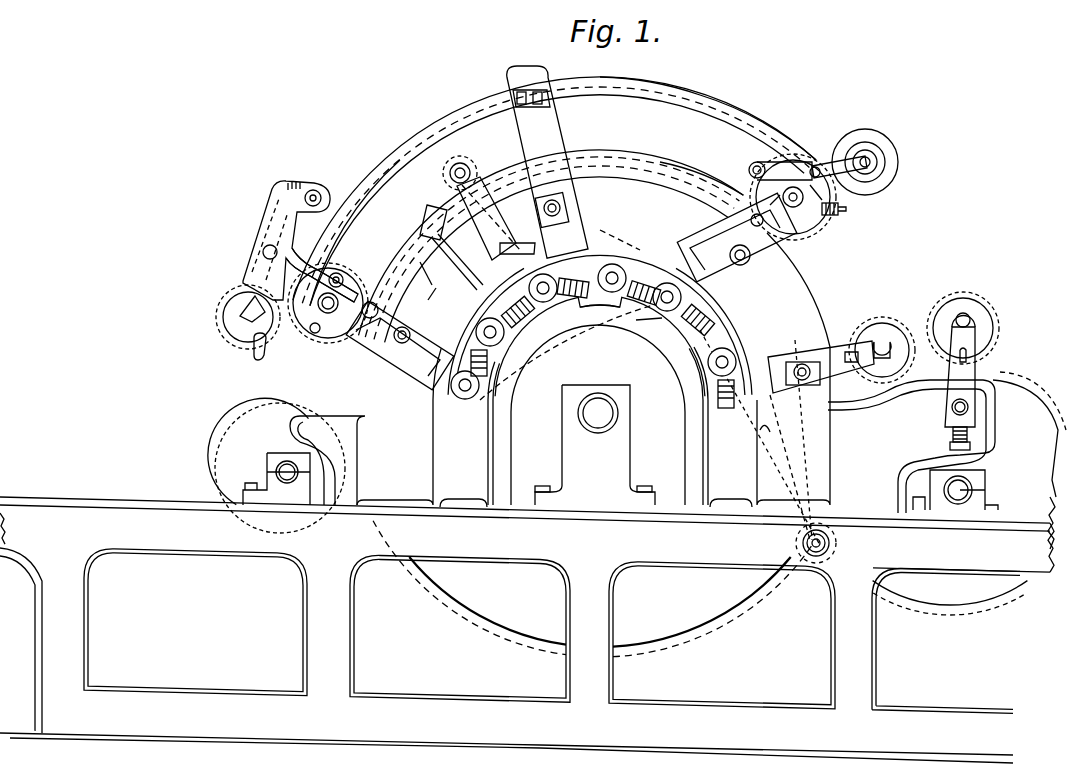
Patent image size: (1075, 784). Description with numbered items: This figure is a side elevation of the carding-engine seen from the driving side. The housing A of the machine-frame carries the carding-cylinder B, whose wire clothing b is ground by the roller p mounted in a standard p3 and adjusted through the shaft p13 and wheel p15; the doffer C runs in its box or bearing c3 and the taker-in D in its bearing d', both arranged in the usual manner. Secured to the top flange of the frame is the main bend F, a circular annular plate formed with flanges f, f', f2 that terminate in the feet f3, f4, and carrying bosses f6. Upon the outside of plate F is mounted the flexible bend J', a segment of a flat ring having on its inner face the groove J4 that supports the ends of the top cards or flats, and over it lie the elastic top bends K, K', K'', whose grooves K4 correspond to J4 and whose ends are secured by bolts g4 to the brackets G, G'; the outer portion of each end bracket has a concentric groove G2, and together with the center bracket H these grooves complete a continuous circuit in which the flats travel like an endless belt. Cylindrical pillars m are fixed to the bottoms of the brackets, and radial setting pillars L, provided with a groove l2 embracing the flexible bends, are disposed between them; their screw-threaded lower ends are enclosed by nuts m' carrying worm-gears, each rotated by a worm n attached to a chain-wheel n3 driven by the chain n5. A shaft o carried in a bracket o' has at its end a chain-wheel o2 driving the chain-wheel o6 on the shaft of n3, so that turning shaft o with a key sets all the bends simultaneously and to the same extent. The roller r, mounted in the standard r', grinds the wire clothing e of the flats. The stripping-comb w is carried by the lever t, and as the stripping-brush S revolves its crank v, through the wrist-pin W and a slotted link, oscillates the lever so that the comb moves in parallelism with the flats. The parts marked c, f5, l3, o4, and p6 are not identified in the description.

The housing of the machine-frame A is at (527, 630).
The carding-cylinder B is at (599, 602).
The wire clothing of the carding-cylinder b is at (590, 589).
The doffer C is at (947, 460).
The wheel and arm c is at (1030, 388).
The doffer box or bearing c3 is at (955, 496).
The taker-in D is at (276, 465).
The taker-in box or bearing d' is at (276, 479).
The wire clothing of the flats e is at (378, 228).
The main bend F is at (560, 369).
The flange of the main bend f is at (511, 308).
The flange of the main bend f' is at (762, 437).
The flange of the main bend f2 is at (591, 415).
The foot of the main bend f3 is at (463, 498).
The foot of the main bend f4 is at (731, 498).
The slide block f5 is at (571, 288).
The boss on the plate f6 is at (430, 293).
The bracket G is at (328, 303).
The bracket G' is at (793, 207).
The concentric groove G2 is at (300, 340).
The bolt g4 is at (341, 292).
The center bracket H is at (547, 162).
The flexible bend J' is at (551, 246).
The groove of the flexible bend J4 is at (690, 175).
The top bend K is at (554, 191).
The top bend K' is at (758, 126).
The top bend K'' is at (650, 104).
The groove of the top bend K4 is at (372, 198).
The radial setting pillar L is at (451, 247).
The groove of the setting pillar l2 is at (749, 170).
The pivot l3 is at (820, 170).
The setting pillar or standard m is at (593, 321).
The nut with worm-gear m' is at (579, 346).
The worm n is at (600, 325).
The chain-wheel n3 is at (523, 356).
The chain or belt n5 is at (575, 350).
The setting shaft o is at (448, 173).
The bracket for the setting shaft o' is at (488, 218).
The pulley or chain-wheel o2 is at (463, 169).
The line o4 is at (620, 234).
The chain-wheel o6 is at (665, 335).
The grinding-roller for the cylinder p is at (882, 350).
The standard for the grinding-roller p3 is at (821, 374).
The line p6 is at (791, 467).
The adjusting shaft p13 is at (824, 550).
The adjusting wheel p15 is at (760, 441).
The grinding-roller for the flats r is at (248, 317).
The standard for the flat grinding-roller r' is at (254, 355).
The stripping-brush S is at (865, 165).
The lever t is at (828, 168).
The crank v is at (870, 160).
The wrist-pin W is at (865, 162).
The stripping-comb w is at (842, 214).